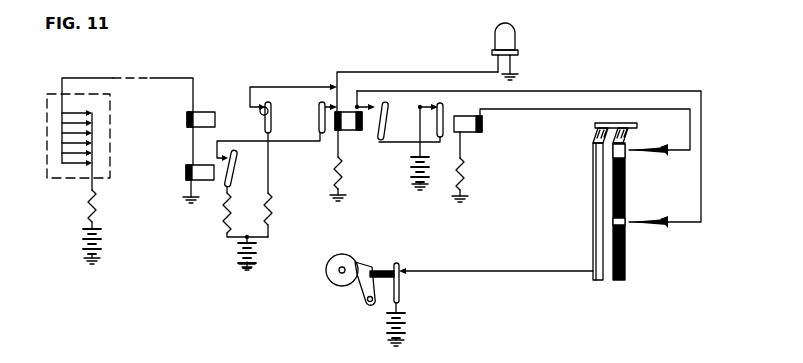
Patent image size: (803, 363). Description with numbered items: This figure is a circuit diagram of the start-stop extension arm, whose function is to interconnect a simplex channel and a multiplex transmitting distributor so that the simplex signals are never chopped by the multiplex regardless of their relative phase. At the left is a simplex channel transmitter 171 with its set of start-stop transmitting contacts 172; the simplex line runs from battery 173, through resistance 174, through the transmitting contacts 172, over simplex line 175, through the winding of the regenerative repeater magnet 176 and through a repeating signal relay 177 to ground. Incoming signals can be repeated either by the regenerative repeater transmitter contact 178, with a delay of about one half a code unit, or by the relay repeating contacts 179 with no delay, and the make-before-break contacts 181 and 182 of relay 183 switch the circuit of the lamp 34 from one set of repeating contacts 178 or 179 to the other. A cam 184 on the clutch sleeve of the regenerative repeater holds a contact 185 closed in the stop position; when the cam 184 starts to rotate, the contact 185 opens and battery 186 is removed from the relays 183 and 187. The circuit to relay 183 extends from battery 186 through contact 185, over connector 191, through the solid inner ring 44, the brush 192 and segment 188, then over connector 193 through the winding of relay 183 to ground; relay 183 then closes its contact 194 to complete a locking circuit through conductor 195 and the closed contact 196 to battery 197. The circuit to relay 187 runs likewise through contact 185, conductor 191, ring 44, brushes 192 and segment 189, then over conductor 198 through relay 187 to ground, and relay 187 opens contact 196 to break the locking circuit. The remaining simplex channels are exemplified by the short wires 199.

The lamp 34 is at (510, 33).
The solid inner ring 44 is at (593, 212).
The simplex channel transmitter 171 is at (50, 162).
The start-stop transmitting contacts 172 is at (98, 117).
The battery 173 is at (85, 243).
The resistance 174 is at (89, 210).
The simplex line 175 is at (112, 78).
The regenerative repeater magnet 176 is at (193, 112).
The repeating signal relay 177 is at (188, 172).
The regenerative repeater transmitter contact 178 is at (274, 117).
The relay repeating contacts 179 is at (234, 155).
The make-before-break contact 181 is at (337, 80).
The make-before-break contact 182 is at (321, 102).
The relay 183 is at (348, 130).
The cam 184 is at (330, 275).
The contact 185 is at (400, 270).
The battery 186 is at (402, 327).
The relay 187 is at (472, 132).
The segment 188 is at (627, 220).
The segment 189 is at (627, 157).
The connector 191 is at (512, 268).
The brush 192 is at (600, 123).
The connector 193 is at (704, 152).
The contact 194 is at (386, 102).
The conductor 195 is at (385, 124).
The contact 196 is at (441, 103).
The battery 197 is at (414, 180).
The conductor 198 is at (512, 110).
The short wires 199 is at (686, 131).